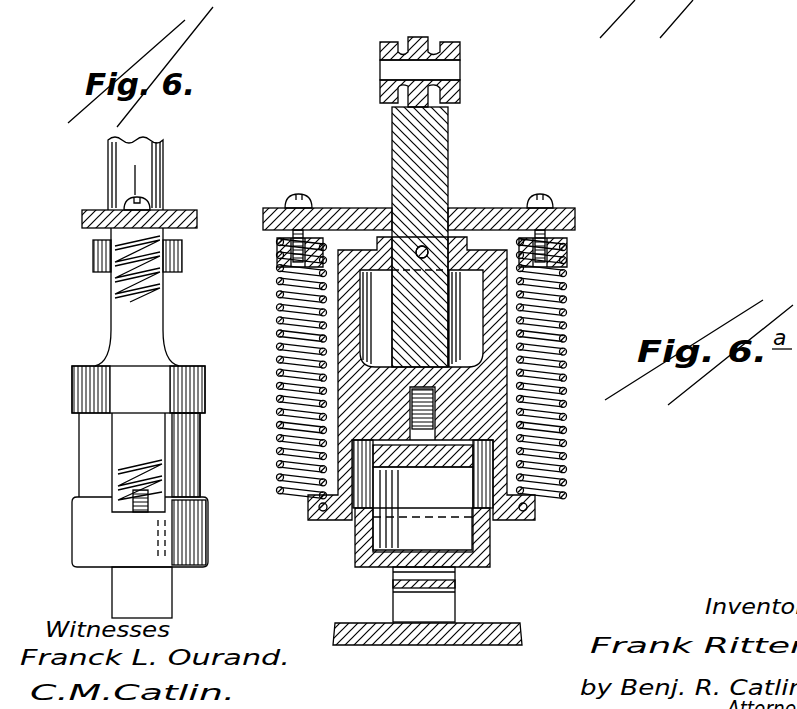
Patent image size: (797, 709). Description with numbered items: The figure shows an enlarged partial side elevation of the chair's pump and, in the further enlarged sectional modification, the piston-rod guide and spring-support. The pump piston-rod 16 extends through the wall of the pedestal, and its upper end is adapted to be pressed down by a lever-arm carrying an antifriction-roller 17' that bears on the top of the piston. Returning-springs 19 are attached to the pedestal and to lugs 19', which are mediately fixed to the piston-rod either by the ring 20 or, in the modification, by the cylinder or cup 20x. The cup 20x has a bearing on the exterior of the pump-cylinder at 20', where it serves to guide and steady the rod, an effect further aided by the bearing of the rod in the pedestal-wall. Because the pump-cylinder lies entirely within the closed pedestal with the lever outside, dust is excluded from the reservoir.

In FIG. 6, the pump piston-rod 16 is at (150, 186).
In FIG. 6A, the pump piston-rod 16 is at (463, 143).
In FIG. 6A, the antifriction-roller 17' is at (457, 72).
In FIG. 6, the returning-springs 19 is at (150, 270).
In FIG. 6A, the returning-springs 19 is at (423, 369).
In FIG. 6, the lugs 19' is at (188, 495).
In FIG. 6A, the lugs 19' is at (422, 534).
In FIG. 6, the ring 20 is at (114, 439).
In FIG. 6, the bearing on pump-cylinder 20' is at (122, 546).
In FIG. 6A, the bearing on pump-cylinder 20' is at (372, 542).
In FIG. 6A, the cylinder or cup 20x is at (350, 384).